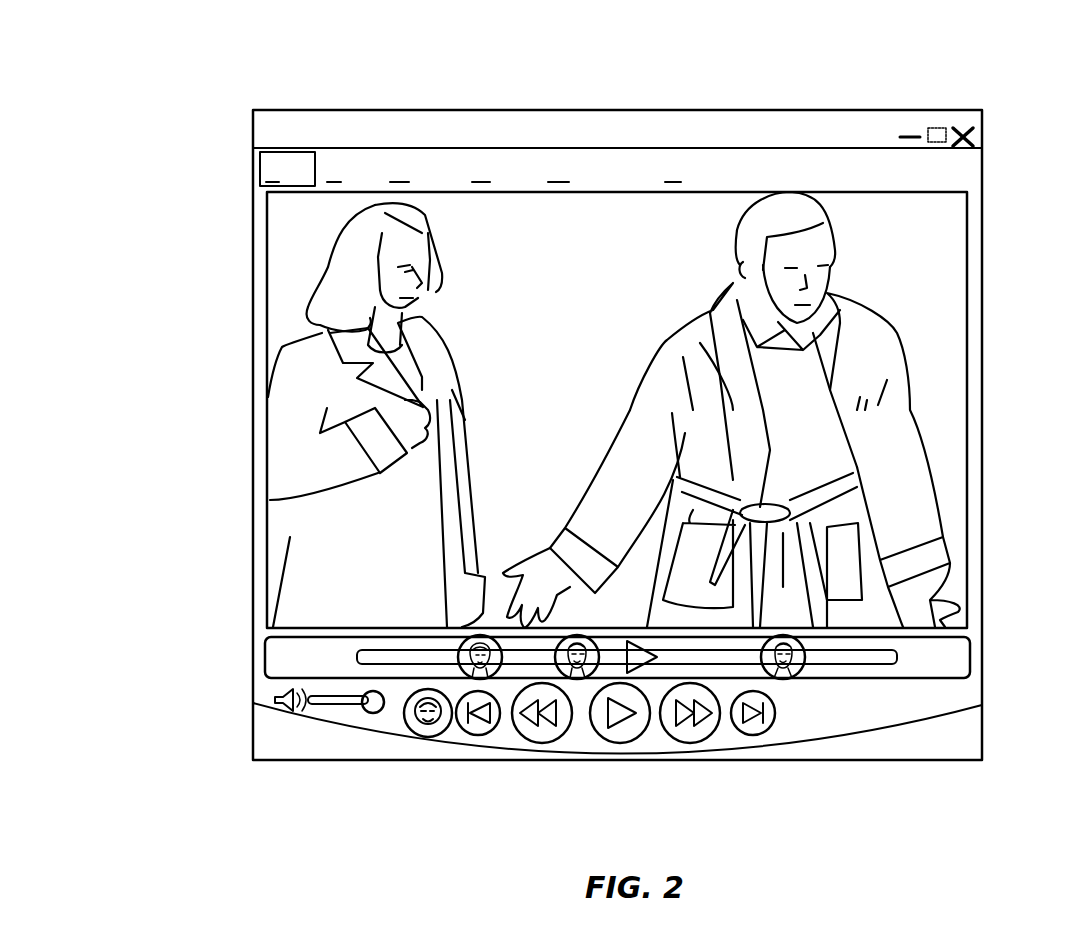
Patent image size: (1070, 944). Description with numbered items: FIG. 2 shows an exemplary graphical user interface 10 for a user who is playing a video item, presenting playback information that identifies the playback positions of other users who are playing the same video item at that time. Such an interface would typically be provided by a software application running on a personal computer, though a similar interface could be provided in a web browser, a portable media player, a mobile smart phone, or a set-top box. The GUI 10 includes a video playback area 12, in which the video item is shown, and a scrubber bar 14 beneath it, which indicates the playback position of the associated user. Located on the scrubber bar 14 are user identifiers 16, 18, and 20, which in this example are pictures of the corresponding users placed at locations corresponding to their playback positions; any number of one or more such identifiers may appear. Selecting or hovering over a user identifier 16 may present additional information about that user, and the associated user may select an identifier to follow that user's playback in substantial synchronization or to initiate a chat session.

The graphical user interface 10 is at (937, 70).
The video playback area 12 is at (968, 345).
The scrubber bar 14 is at (265, 652).
The user identifier 16 is at (457, 668).
The user identifier 18 is at (580, 679).
The user identifier 20 is at (790, 680).